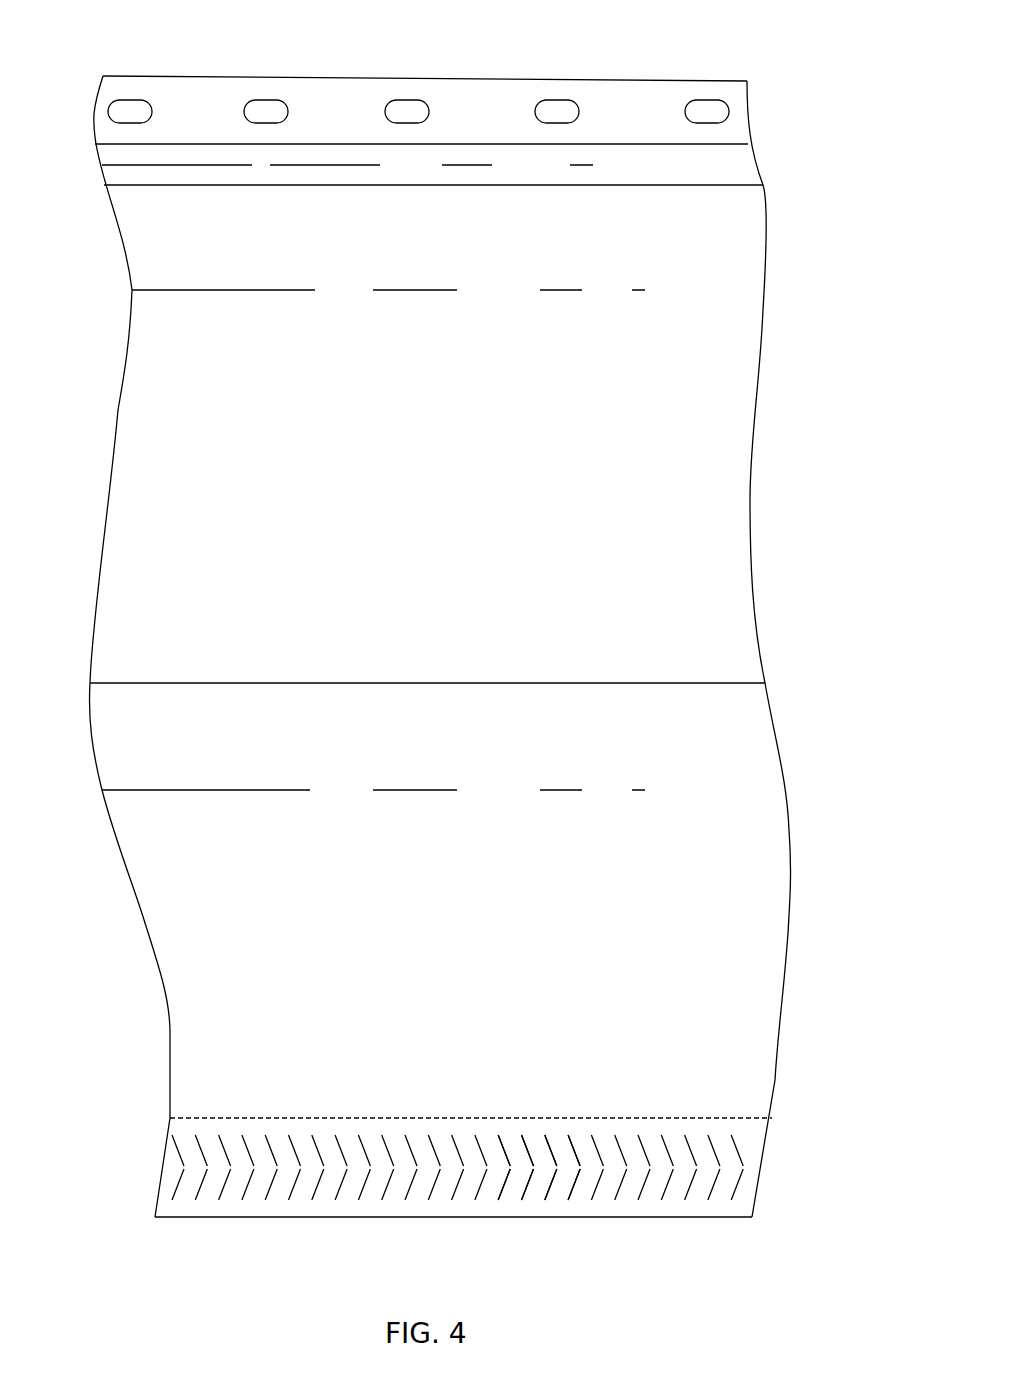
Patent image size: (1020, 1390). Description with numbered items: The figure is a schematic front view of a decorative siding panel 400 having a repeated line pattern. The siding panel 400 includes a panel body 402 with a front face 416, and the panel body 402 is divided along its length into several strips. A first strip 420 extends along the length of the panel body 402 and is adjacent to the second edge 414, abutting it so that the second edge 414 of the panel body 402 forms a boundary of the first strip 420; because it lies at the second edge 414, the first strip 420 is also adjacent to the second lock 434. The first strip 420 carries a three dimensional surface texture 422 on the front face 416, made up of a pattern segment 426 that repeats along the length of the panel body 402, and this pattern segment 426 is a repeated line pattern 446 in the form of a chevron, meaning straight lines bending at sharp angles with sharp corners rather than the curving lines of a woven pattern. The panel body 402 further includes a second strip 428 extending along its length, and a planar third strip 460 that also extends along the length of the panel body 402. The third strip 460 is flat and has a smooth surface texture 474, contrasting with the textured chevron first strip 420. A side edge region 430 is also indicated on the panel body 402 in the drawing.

The siding panel 400 is at (795, 68).
The panel body 402 is at (783, 430).
The smooth surface texture 474 is at (702, 517).
The third strip 460 is at (238, 455).
The front face 416 is at (543, 647).
The second strip 428 is at (210, 922).
The side edge 430 is at (745, 895).
The repeated line pattern 446 is at (173, 1153).
The first strip 420 is at (150, 1118).
The pattern segment 426 is at (594, 1132).
The three dimensional surface texture 422 is at (743, 1148).
The second edge 414 is at (453, 1217).
The second lock 434 is at (777, 1205).